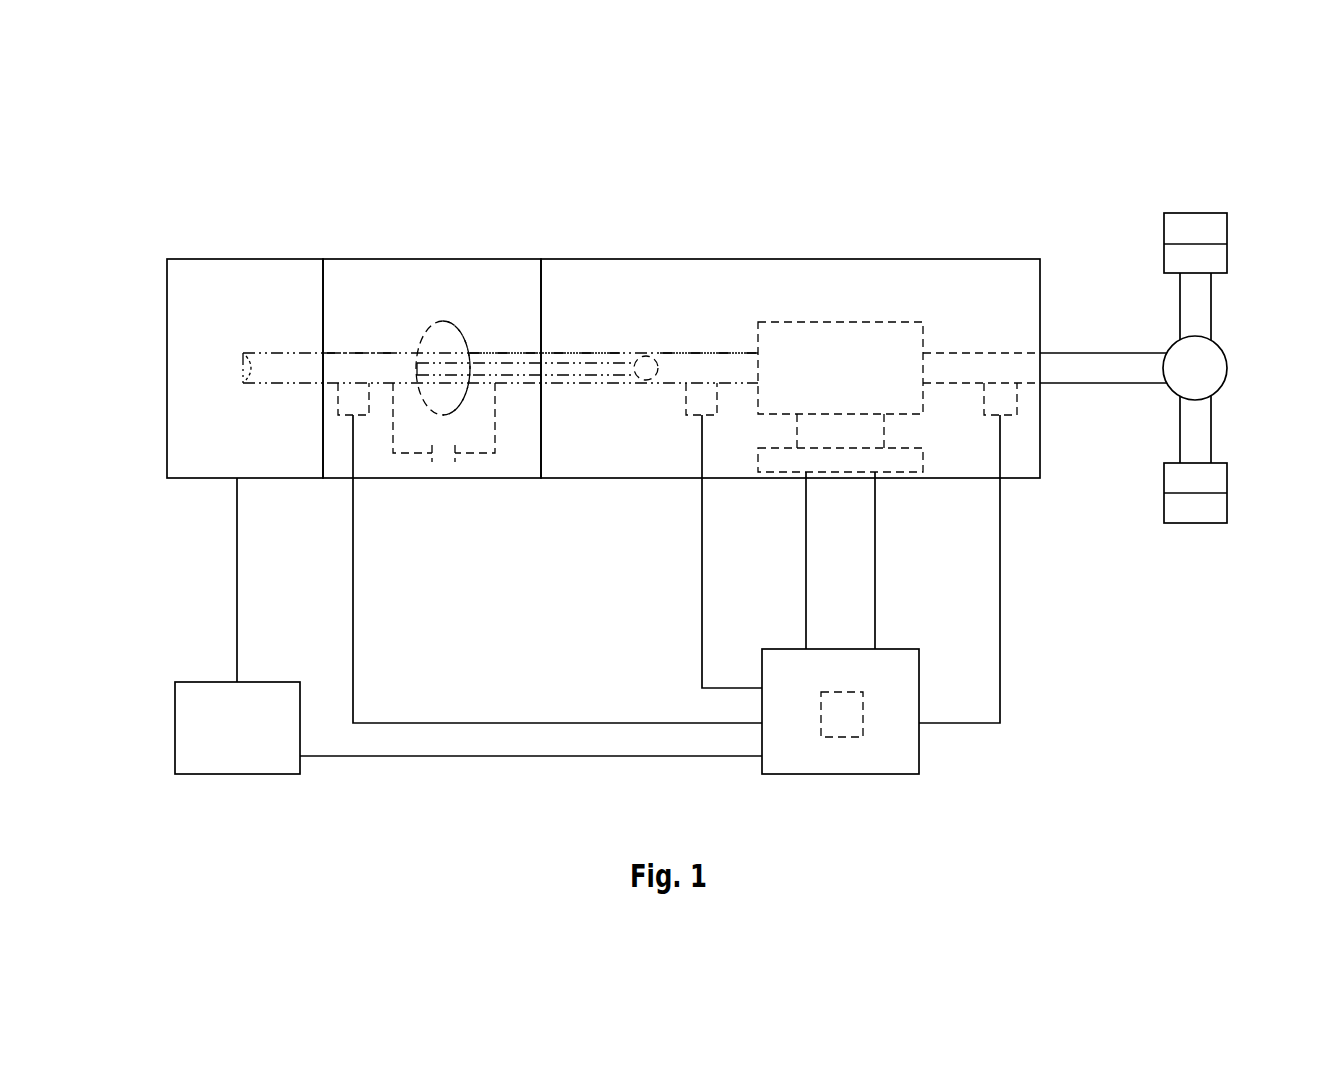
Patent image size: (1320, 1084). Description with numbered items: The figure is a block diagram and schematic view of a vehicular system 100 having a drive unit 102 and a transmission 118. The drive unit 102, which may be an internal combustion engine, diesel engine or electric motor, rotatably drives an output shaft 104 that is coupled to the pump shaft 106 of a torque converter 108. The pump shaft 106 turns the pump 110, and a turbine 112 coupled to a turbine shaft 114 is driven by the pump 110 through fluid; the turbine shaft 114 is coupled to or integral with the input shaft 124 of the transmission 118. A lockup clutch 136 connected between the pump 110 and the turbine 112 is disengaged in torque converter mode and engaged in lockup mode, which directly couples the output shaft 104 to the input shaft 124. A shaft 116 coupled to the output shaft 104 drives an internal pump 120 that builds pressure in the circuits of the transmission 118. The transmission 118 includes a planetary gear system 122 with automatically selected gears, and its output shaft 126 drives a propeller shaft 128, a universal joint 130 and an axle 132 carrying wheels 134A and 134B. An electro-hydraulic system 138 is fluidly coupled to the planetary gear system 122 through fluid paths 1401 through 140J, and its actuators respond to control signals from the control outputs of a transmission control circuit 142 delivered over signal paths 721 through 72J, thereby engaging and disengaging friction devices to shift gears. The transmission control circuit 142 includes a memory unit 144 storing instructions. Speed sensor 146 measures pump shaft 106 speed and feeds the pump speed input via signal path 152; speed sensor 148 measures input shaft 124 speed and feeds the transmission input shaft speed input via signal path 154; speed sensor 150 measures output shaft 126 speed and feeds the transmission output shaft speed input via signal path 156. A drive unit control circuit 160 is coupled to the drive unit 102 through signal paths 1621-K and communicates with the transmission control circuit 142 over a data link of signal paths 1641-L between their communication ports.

The vehicular system 100 is at (200, 190).
The drive unit 102 is at (270, 259).
The output shaft 104 is at (282, 353).
The pump shaft 106 is at (363, 353).
The torque converter 108 is at (440, 259).
The pump 110 is at (425, 330).
The turbine 112 is at (462, 330).
The turbine shaft 114 is at (507, 355).
The shaft 116 is at (560, 375).
The transmission 118 is at (790, 259).
The internal pump 120 is at (646, 356).
The planetary gear system 122 is at (866, 382).
The input shaft 124 is at (712, 353).
The output shaft 126 is at (980, 353).
The propeller shaft 128 is at (1103, 353).
The universal joint 130 is at (1224, 383).
The axle 132 is at (1212, 308).
The wheel 134A is at (1196, 212).
The wheel 134B is at (1195, 524).
The lockup clutch 136 is at (457, 458).
The electro-hydraulic system 138 is at (898, 478).
The fluid path 1401 is at (797, 430).
The fluid path 140J is at (884, 427).
The transmission control circuit 142 is at (816, 774).
The memory unit 144 is at (851, 737).
The speed sensor 146 is at (335, 398).
The speed sensor 148 is at (695, 400).
The speed sensor 150 is at (1017, 398).
The signal path 152 is at (495, 723).
The signal path 154 is at (702, 588).
The signal path 156 is at (1000, 620).
The drive unit control circuit 160 is at (228, 774).
The signal paths 1621-K is at (237, 523).
The signal paths 1641-L is at (455, 756).
The signal path 721 is at (806, 528).
The signal path 72J is at (875, 588).